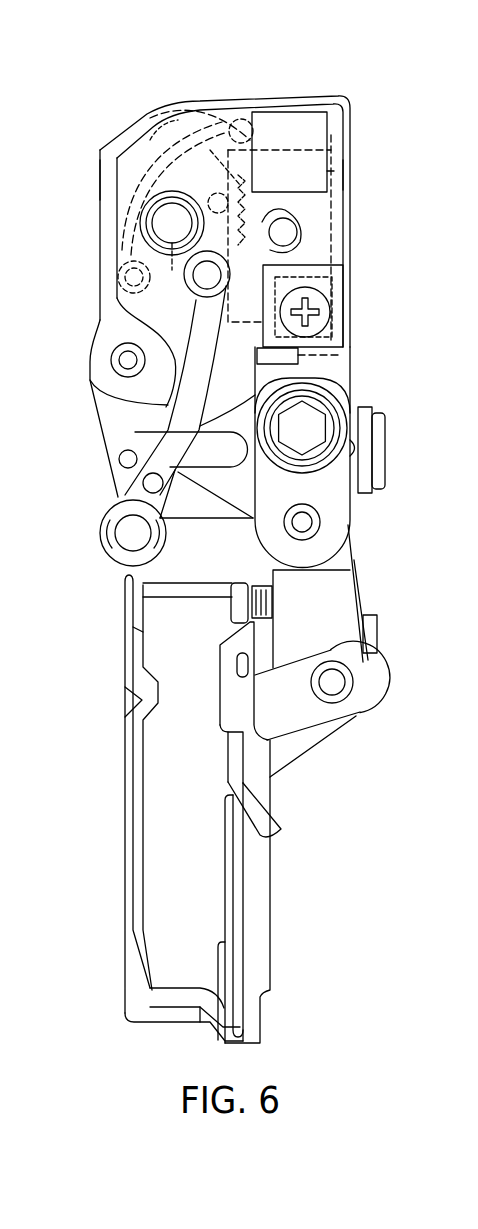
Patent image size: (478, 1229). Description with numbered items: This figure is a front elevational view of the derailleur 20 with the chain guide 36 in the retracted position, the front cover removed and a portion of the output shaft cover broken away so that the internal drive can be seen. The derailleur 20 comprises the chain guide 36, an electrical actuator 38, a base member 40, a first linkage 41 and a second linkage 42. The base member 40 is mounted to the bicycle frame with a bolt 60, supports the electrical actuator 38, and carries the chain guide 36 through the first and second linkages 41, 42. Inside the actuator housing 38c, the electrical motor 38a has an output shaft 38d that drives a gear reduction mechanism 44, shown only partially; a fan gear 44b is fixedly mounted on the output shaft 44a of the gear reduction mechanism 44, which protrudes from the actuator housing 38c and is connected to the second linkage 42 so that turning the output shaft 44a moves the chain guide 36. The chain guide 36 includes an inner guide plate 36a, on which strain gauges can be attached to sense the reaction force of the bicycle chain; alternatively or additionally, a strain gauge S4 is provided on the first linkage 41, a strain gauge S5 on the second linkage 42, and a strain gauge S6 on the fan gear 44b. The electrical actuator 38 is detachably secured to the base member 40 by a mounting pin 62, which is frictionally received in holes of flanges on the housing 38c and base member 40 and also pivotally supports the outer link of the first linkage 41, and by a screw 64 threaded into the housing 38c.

The derailleur 20 is at (312, 70).
The chain guide 36 is at (273, 913).
The inner guide plate 36a is at (255, 958).
The electrical actuator 38 is at (350, 207).
The electrical motor 38a is at (352, 176).
The actuator housing 38c is at (100, 173).
The output shaft 38d is at (340, 355).
The base member 40 is at (352, 514).
The first linkage 41 is at (108, 442).
The second linkage 42 is at (375, 668).
The gear reduction mechanism 44 is at (207, 150).
The output shaft 44a is at (160, 229).
The fan gear 44b is at (158, 122).
The bolt 60 is at (325, 395).
The mounting pin 62 is at (112, 358).
The screw 64 is at (322, 300).
The strain gauge S4 is at (120, 466).
The strain gauge S5 is at (143, 487).
The strain gauge S6 is at (257, 176).